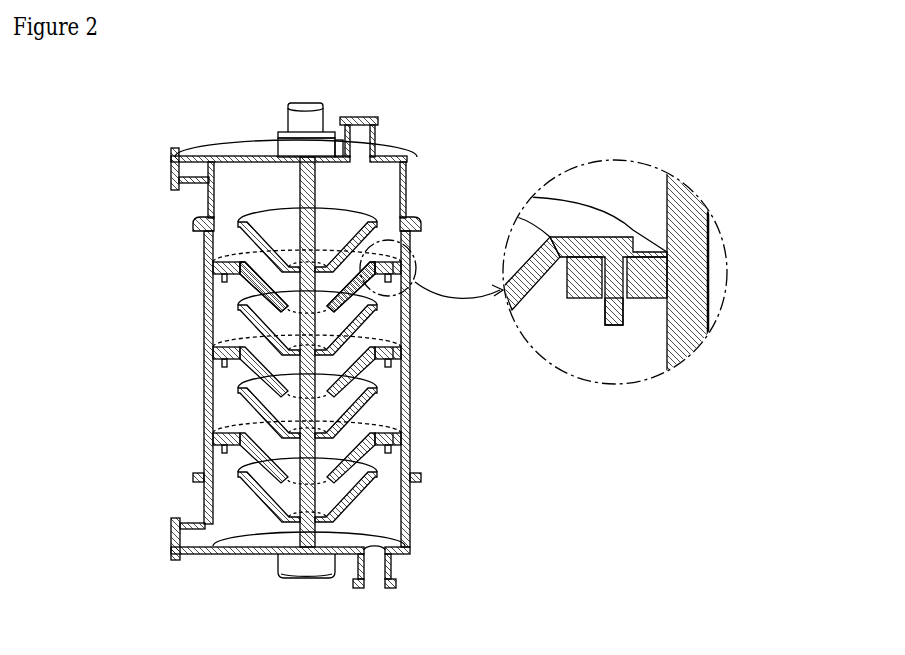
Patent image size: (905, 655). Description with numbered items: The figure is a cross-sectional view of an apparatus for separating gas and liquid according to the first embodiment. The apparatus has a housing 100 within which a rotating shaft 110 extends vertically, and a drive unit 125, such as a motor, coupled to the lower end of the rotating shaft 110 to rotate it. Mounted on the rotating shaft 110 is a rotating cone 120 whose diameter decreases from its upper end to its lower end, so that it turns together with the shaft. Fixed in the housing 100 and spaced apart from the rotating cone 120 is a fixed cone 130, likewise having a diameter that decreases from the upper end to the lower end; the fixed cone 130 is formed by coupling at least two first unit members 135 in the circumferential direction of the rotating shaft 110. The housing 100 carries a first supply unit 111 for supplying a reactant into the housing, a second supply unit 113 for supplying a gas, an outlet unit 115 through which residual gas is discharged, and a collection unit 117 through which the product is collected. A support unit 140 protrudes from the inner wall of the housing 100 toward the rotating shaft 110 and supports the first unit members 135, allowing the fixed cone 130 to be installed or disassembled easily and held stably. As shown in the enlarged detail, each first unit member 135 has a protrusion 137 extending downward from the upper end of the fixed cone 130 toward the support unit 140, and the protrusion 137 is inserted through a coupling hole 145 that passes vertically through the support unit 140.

The housing 100 is at (437, 163).
The rotating shaft 110 is at (300, 188).
The first supply unit 111 is at (170, 153).
The second supply unit 113 is at (172, 524).
The outlet unit 115 is at (373, 132).
The collection unit 117 is at (360, 573).
The rotating cone 120 is at (352, 222).
The drive unit 125 is at (288, 580).
The fixed cone 130 is at (133, 252).
The first unit member 135 is at (243, 243).
The protrusion 137 is at (618, 310).
The support unit 140 is at (647, 260).
The coupling hole 145 is at (637, 273).